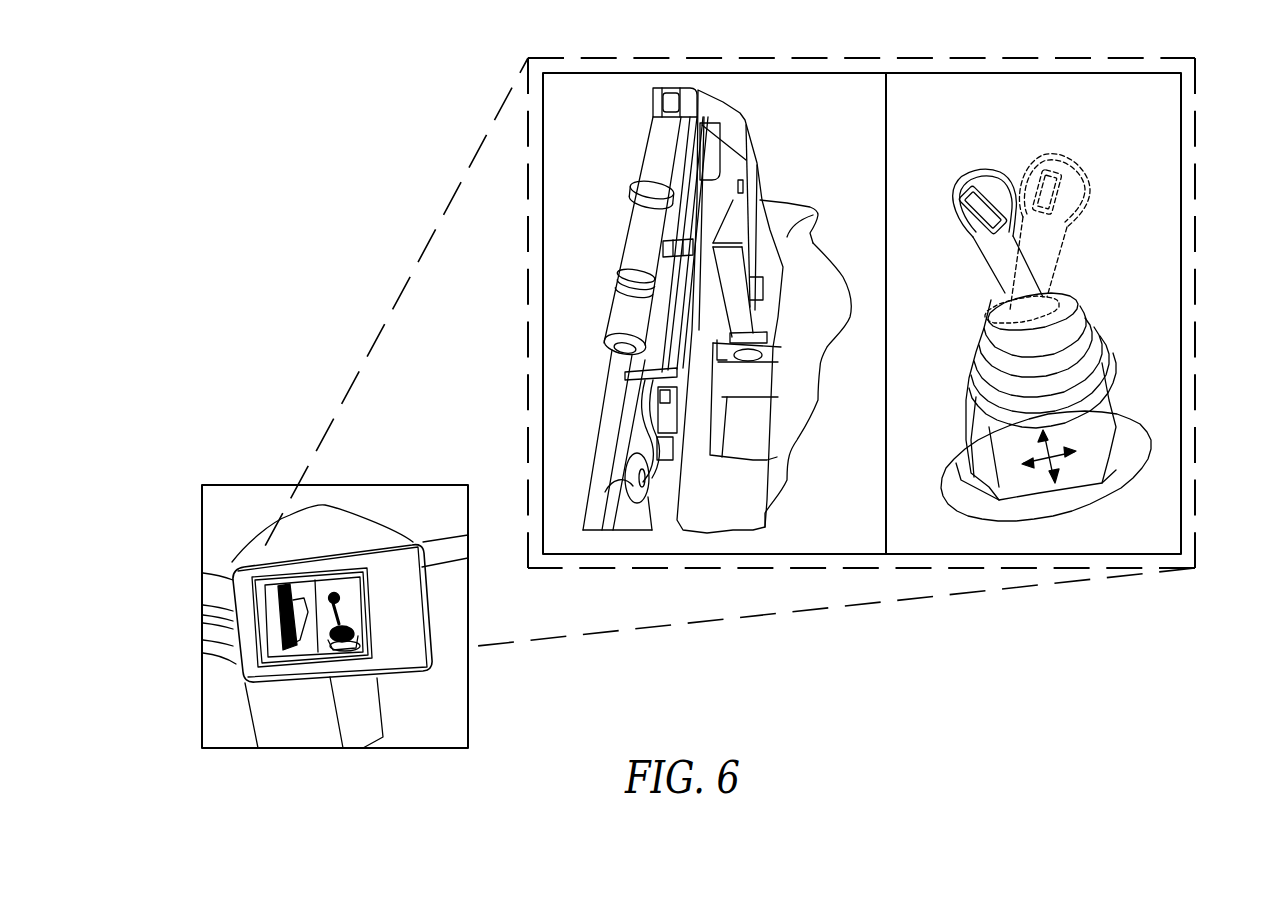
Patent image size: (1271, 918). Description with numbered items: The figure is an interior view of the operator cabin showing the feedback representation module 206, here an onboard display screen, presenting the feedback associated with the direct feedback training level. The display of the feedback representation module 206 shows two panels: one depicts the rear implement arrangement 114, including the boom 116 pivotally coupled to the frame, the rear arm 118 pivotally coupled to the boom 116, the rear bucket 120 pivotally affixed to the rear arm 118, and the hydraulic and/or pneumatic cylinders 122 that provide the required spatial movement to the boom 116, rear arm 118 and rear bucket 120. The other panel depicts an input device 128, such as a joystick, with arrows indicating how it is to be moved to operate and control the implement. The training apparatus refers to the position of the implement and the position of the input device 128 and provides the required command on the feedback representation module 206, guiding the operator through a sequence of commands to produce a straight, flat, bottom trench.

The rear implement arrangement 114 is at (621, 130).
The boom 116 is at (723, 203).
The rear arm 118 is at (732, 280).
The rear bucket 120 is at (748, 408).
The hydraulic and/or pneumatic cylinders 122 is at (645, 235).
The input device 128 is at (1015, 257).
The feedback representation module 206 is at (243, 597).